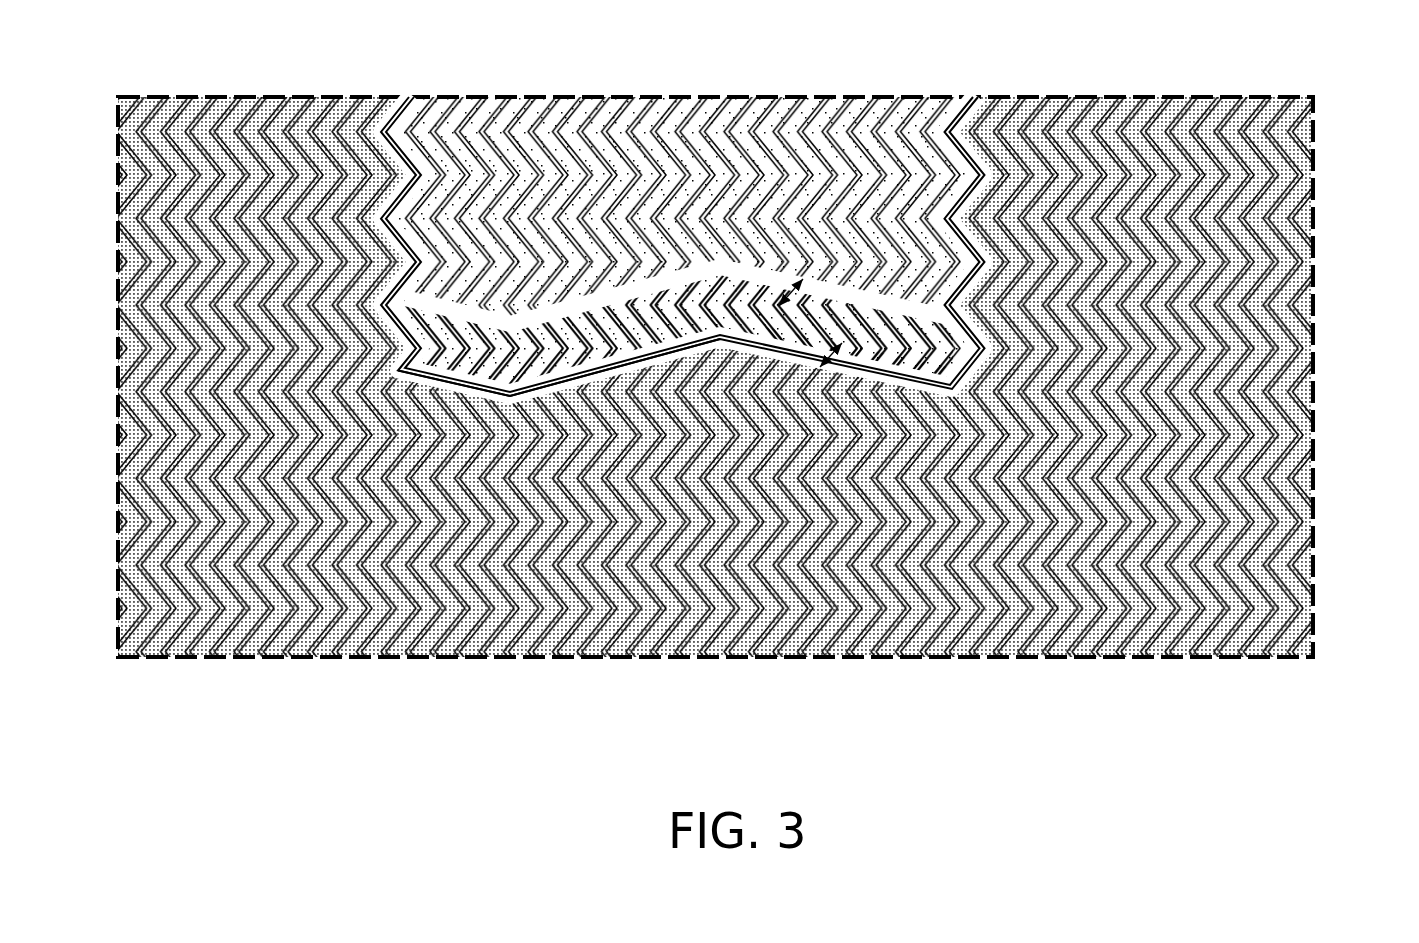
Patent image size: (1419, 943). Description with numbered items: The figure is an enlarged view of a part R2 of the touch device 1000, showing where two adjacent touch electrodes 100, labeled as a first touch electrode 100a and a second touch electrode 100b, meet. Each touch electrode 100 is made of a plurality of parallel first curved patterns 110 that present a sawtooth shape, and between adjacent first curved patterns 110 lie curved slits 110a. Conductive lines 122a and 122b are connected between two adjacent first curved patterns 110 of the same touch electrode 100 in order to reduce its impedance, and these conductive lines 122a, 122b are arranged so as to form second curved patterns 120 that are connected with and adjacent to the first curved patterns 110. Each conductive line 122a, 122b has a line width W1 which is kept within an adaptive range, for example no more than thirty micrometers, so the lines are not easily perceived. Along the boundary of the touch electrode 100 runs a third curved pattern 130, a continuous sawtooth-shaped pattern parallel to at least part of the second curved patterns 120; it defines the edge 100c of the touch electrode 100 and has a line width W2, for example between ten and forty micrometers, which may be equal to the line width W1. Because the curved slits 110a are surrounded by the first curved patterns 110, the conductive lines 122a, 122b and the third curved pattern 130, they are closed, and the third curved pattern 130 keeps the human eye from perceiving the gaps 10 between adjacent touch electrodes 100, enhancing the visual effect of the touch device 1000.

The touch device 1000 is at (768, 399).
The second curved pattern 120 is at (768, 361).
The part R2 is at (163, 95).
The touch electrode 100 is at (757, 361).
The touch electrode 100b is at (398, 113).
The touch electrode 100a is at (478, 80).
The first curved pattern 110 is at (884, 112).
The conductive line 122b is at (728, 277).
The conductive line 122a is at (887, 320).
The curved slit 110a is at (890, 363).
The third curved pattern 130 is at (927, 388).
The edge 100c is at (925, 398).
The gap 10 is at (573, 378).
The line width W1 is at (785, 290).
The line width W2 is at (822, 366).